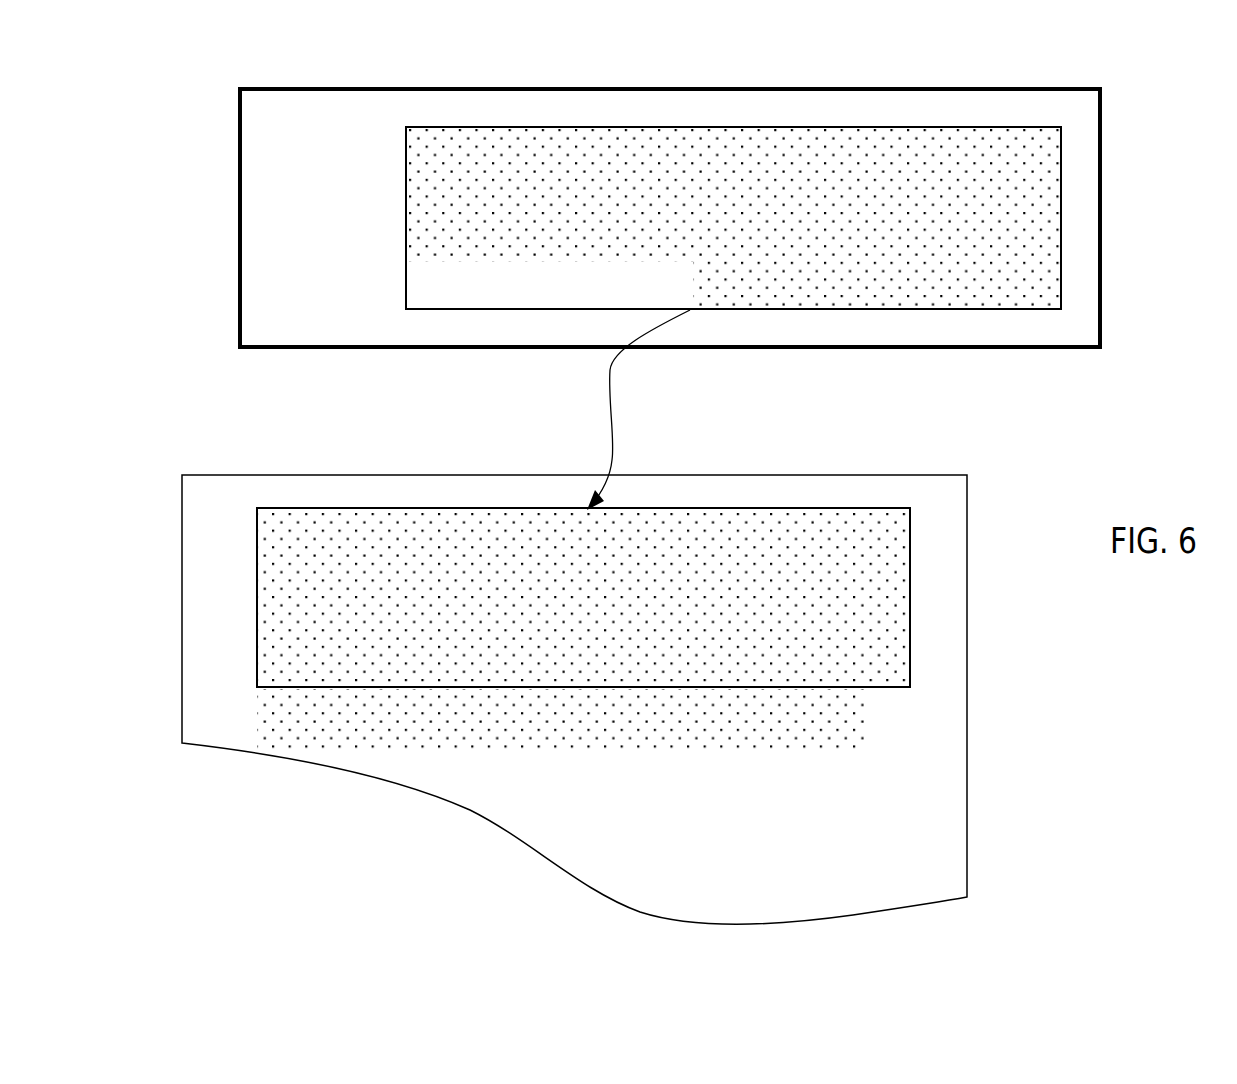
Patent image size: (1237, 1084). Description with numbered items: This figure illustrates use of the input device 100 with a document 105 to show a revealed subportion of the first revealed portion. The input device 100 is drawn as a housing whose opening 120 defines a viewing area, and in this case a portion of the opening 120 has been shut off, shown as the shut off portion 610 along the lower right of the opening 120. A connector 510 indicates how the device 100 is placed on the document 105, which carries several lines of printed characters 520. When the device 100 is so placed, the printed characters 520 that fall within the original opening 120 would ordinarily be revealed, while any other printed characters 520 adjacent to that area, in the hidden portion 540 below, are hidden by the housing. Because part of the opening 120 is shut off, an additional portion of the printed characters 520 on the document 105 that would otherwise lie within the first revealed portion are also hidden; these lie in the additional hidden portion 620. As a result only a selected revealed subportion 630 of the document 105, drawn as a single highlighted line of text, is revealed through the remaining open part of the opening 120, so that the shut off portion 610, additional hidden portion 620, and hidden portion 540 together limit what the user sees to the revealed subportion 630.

The input device 100 is at (328, 305).
The document 105 is at (812, 879).
The opening 120 is at (406, 167).
The connector 510 is at (612, 438).
The printed characters 520 is at (787, 530).
The hidden portion 540 is at (620, 793).
The shut off portion 610 is at (875, 273).
The additional hidden portion 620 is at (883, 653).
The revealed subportion 630 is at (258, 668).